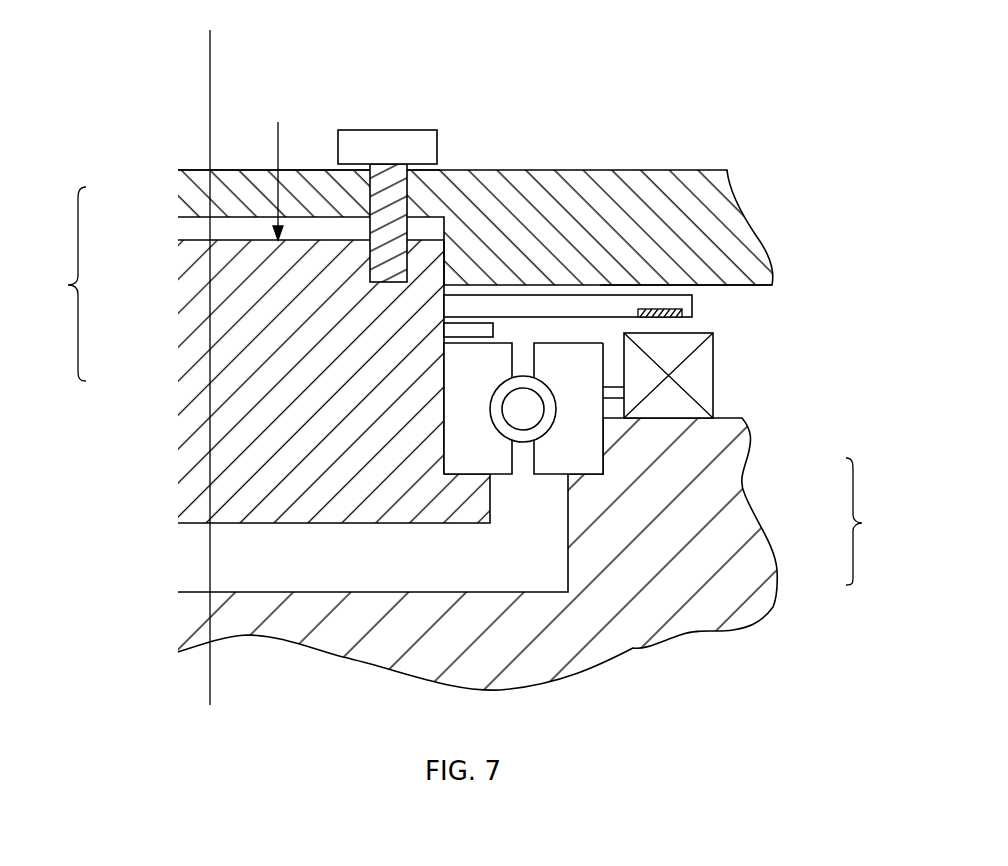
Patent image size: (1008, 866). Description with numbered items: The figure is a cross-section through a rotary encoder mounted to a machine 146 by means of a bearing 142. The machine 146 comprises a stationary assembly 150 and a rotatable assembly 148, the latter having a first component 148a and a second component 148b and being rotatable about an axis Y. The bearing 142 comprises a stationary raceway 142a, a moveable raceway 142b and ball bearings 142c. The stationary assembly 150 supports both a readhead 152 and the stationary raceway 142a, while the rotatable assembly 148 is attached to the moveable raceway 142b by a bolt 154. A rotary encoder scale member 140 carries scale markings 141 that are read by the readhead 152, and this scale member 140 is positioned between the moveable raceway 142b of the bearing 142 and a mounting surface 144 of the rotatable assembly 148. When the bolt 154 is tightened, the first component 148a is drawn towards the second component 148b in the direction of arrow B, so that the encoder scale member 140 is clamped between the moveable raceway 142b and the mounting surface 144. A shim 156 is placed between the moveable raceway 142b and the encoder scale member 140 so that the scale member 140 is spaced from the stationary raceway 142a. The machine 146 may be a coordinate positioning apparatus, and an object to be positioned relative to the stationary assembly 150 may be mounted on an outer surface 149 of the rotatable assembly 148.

The machine 146 is at (155, 84).
The outer surface 149 is at (197, 170).
The rotatable assembly 148 is at (51, 284).
The first component 148a is at (237, 180).
The second component 148b is at (220, 335).
The stationary assembly 150 is at (237, 613).
The bolt 154 is at (378, 137).
The shim 156 is at (470, 328).
The rotary encoder scale member 140 is at (527, 307).
The scale markings 141 is at (657, 310).
The mounting surface 144 is at (747, 286).
The readhead 152 is at (703, 370).
The bearing 142 is at (681, 464).
The stationary raceway 142a is at (580, 450).
The moveable raceway 142b is at (475, 453).
The ball bearings 142c is at (533, 408).
The arrow B is at (278, 122).
The axis Y is at (210, 38).